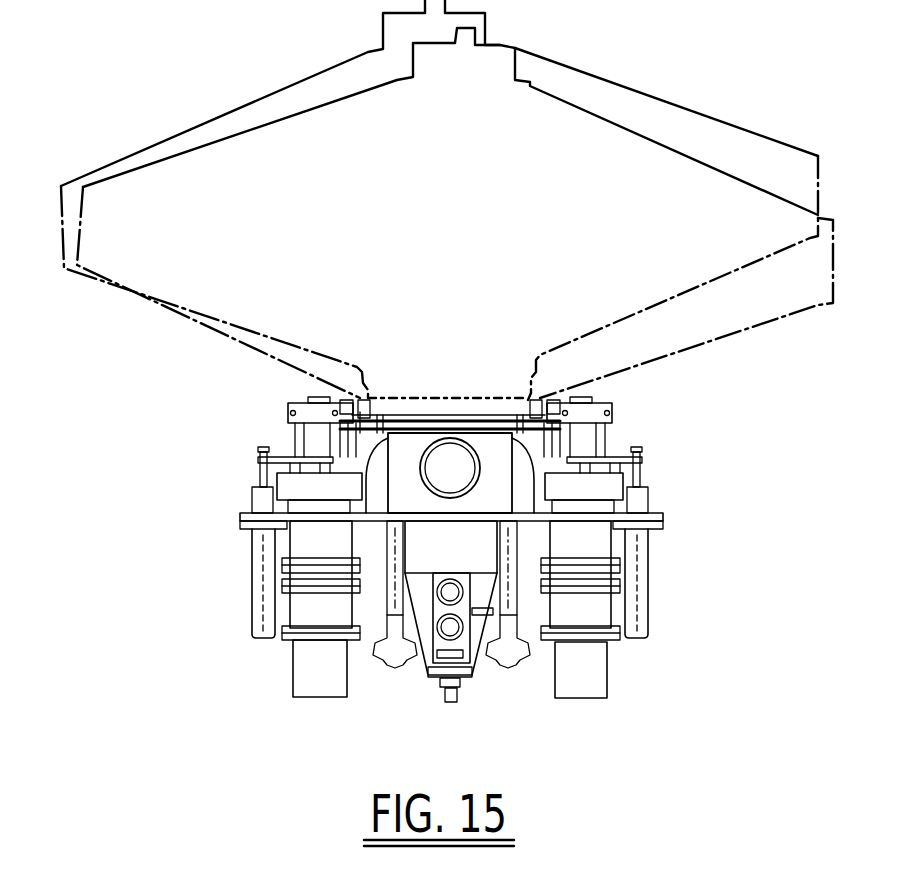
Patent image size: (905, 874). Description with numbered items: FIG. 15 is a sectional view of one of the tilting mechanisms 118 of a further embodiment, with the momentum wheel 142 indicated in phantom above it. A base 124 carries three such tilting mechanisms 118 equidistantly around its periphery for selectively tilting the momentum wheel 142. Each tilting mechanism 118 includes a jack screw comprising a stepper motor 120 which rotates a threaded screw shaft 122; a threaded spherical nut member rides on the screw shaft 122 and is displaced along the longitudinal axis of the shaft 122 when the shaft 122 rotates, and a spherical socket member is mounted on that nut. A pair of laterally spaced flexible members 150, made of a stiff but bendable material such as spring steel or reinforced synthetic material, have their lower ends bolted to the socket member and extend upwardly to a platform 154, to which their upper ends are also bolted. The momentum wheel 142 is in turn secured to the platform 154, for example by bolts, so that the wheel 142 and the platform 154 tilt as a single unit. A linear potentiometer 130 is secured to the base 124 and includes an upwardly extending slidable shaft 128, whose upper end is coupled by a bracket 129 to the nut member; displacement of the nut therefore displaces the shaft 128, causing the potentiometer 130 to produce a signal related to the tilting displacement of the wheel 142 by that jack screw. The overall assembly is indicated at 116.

The dispensing assembly 116 is at (191, 612).
The tilting mechanism 118 is at (268, 658).
The stepper motor 120 is at (312, 687).
The threaded screw shaft 122 is at (287, 435).
The base 124 is at (243, 507).
The slidable shaft 128 is at (258, 470).
The bracket 129 is at (267, 457).
The linear potentiometer 130 is at (255, 563).
The momentum wheel 142 is at (643, 143).
The flexible member 150 is at (537, 432).
The platform 154 is at (360, 412).